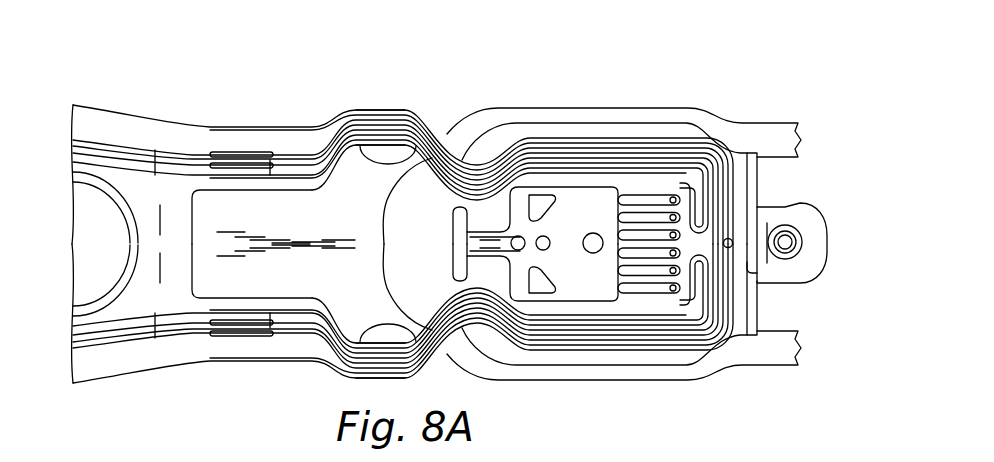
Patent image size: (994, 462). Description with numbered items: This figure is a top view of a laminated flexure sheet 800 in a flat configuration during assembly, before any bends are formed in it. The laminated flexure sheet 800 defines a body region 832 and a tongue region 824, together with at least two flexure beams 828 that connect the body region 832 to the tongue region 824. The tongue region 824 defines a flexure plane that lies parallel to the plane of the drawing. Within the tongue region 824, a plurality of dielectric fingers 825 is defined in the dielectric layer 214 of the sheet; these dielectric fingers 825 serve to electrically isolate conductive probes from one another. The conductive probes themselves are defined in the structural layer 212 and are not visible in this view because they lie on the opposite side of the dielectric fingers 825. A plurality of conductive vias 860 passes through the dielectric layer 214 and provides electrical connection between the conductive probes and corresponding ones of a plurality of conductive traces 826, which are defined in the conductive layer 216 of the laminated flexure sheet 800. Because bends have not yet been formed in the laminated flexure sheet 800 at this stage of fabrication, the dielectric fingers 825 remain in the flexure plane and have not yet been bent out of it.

The laminated flexure sheet 800 is at (229, 66).
The body region 832 is at (185, 256).
The conductive traces 826 is at (343, 155).
The flexure beams 828 is at (511, 109).
The tongue region 824 is at (579, 210).
The conductive vias 860 is at (673, 232).
The dielectric fingers 825 is at (600, 292).
The structural layer 212 is at (817, 253).
The conductive layer 216 is at (768, 223).
The dielectric layer 214 is at (748, 272).